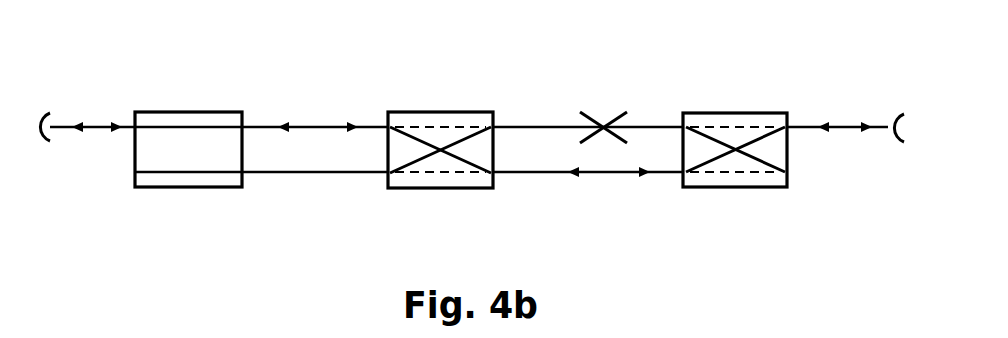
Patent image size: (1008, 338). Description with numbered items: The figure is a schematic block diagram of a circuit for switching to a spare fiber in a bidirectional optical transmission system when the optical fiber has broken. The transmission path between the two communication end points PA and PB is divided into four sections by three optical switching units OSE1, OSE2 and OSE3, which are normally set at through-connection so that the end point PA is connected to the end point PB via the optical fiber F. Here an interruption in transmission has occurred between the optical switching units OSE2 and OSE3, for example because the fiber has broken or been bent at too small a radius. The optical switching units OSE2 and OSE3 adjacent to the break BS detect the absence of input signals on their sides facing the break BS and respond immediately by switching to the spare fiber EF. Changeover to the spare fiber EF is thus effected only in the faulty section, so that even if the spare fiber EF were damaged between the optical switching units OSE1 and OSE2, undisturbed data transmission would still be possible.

The communication end point PA is at (87, 103).
The communication end point PB is at (903, 107).
The optical switching unit OSE1 is at (217, 115).
The optical switching unit OSE2 is at (471, 116).
The optical switching unit OSE3 is at (765, 116).
The break BS is at (639, 75).
The optical fiber F is at (562, 190).
The spare fiber EF is at (624, 233).